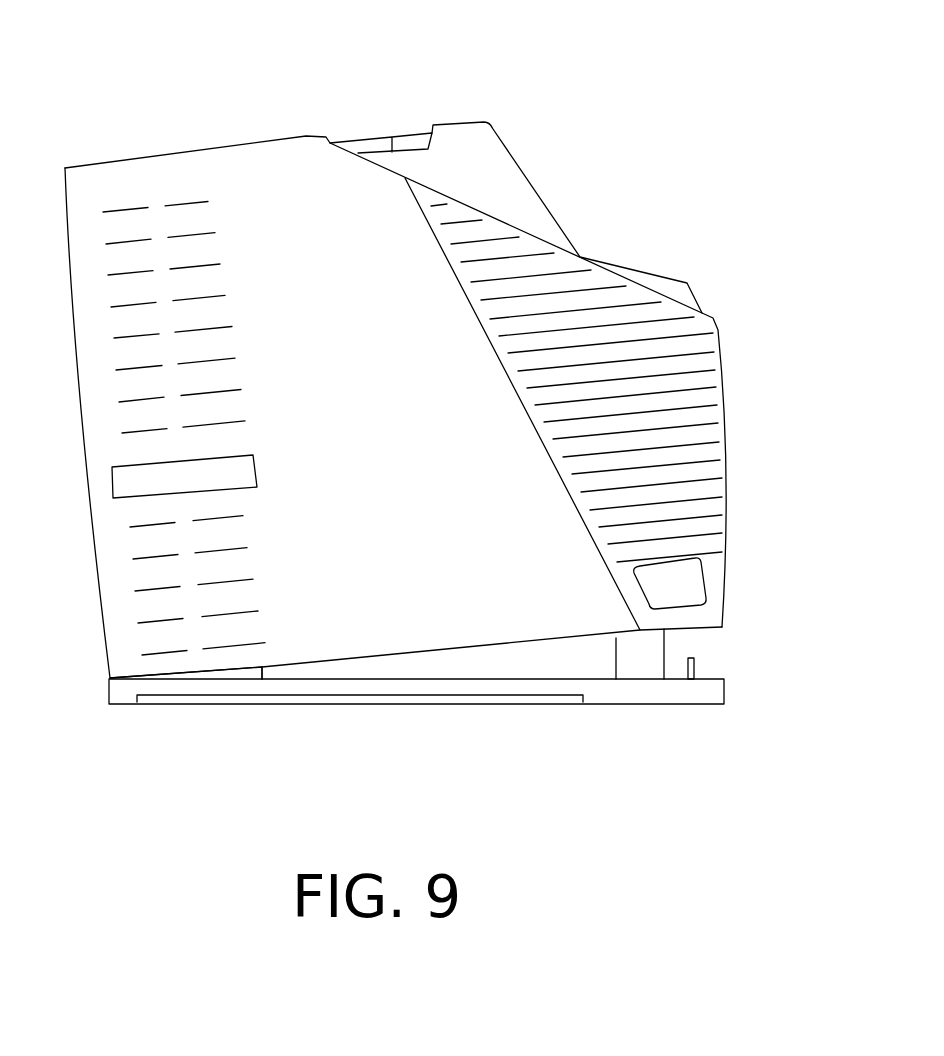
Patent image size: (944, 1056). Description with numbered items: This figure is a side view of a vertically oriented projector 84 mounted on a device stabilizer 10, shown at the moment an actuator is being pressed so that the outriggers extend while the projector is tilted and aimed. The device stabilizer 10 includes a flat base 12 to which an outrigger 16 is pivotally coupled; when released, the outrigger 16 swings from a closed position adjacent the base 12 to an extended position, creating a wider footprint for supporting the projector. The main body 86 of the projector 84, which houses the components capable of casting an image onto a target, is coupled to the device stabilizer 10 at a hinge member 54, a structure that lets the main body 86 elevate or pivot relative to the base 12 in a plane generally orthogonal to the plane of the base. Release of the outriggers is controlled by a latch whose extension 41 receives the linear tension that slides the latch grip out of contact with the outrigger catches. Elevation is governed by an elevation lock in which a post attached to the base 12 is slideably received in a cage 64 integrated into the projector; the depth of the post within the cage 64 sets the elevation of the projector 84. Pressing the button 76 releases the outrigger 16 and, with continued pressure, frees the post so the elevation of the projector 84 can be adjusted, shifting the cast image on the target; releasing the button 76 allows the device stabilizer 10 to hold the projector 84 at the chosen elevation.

The device stabilizer 10 is at (437, 469).
The base 12 is at (690, 693).
The outrigger 16 is at (460, 703).
The extension 41 is at (697, 663).
The hinge member 54 is at (265, 671).
The cage 64 is at (628, 660).
The button 76 is at (682, 582).
The projector 84 is at (618, 150).
The main body 86 is at (705, 377).